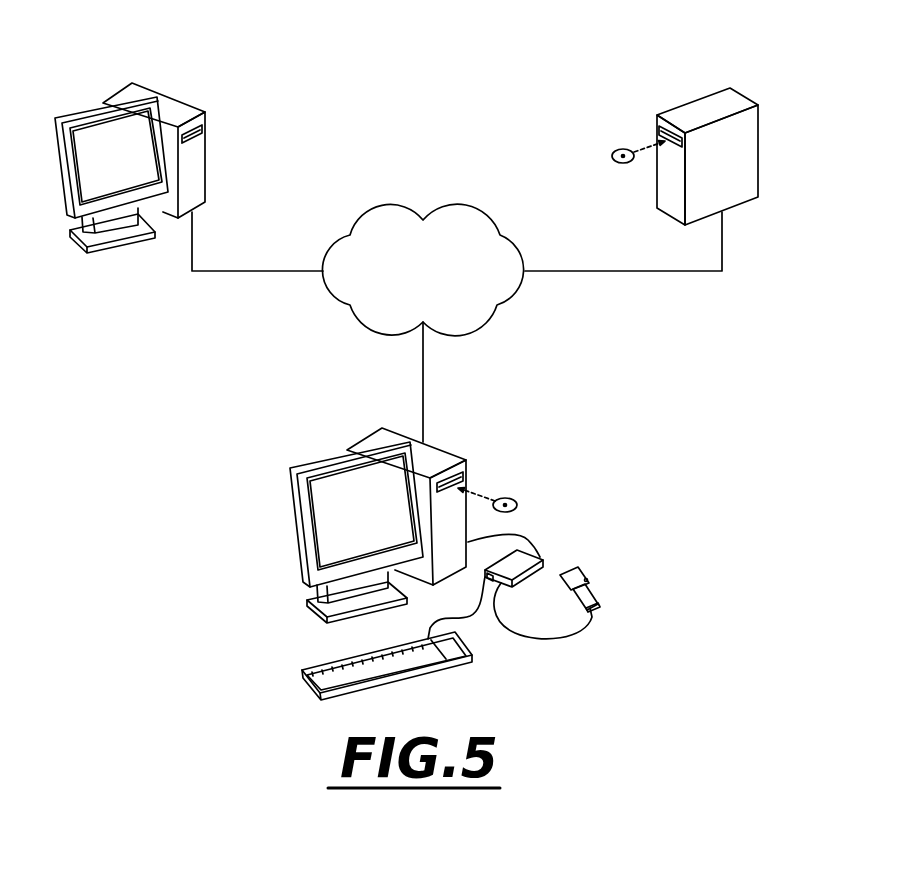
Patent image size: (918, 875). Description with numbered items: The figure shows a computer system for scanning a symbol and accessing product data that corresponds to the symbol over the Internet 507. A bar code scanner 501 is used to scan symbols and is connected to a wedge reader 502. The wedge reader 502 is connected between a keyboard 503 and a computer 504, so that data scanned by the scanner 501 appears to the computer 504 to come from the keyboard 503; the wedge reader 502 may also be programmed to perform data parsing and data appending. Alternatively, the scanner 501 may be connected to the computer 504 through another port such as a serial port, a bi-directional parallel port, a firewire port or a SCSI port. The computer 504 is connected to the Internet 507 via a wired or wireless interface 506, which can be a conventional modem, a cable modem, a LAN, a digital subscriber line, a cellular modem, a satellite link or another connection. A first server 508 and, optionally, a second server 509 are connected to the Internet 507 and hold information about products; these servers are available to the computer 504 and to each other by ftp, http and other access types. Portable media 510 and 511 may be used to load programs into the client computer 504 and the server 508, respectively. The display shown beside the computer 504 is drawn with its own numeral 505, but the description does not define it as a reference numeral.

The bar code scanner 501 is at (585, 572).
The wedge reader 502 is at (540, 552).
The keyboard 503 is at (427, 672).
The computer 504 is at (457, 450).
The display monitor 505 is at (297, 505).
The wired or wireless interface 506 is at (423, 372).
The Internet 507 is at (448, 279).
The first server 508 is at (748, 152).
The second server 509 is at (183, 106).
The portable media 510 is at (513, 499).
The portable media 511 is at (620, 150).